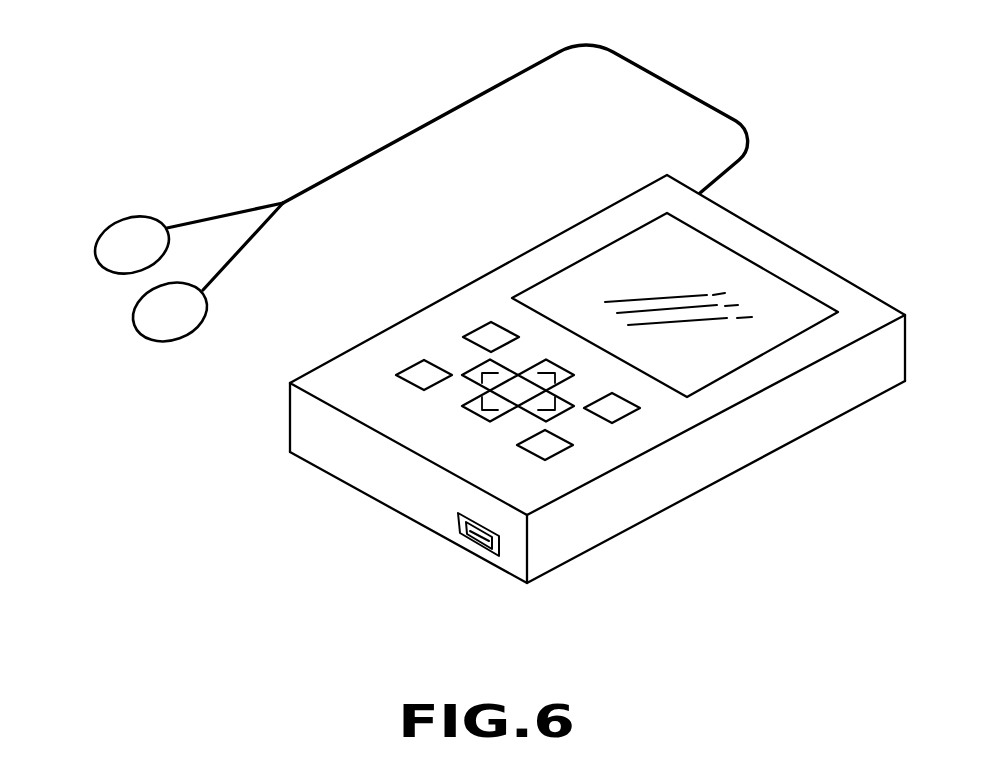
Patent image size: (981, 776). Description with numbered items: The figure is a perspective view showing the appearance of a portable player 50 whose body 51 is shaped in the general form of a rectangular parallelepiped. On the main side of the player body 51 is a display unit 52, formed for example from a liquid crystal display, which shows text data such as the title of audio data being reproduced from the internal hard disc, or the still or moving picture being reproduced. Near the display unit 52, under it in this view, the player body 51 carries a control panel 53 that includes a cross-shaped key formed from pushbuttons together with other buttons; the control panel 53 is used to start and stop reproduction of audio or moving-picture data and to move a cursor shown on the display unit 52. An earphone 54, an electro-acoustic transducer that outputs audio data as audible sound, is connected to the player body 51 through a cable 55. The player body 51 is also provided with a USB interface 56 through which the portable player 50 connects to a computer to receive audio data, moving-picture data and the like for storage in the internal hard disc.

The portable player 50 is at (824, 148).
The player body 51 is at (850, 276).
The display unit 52 is at (753, 292).
The control panel 53 is at (450, 423).
The earphone 54 is at (137, 313).
The cable 55 is at (411, 130).
The USB interface 56 is at (461, 539).